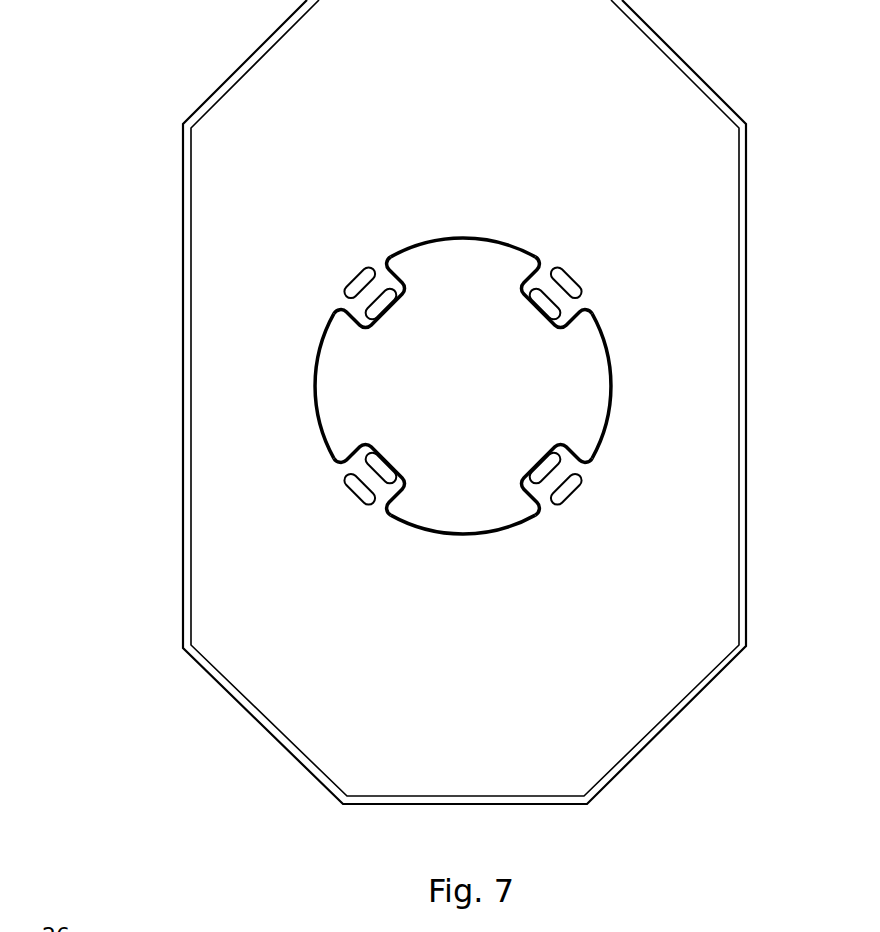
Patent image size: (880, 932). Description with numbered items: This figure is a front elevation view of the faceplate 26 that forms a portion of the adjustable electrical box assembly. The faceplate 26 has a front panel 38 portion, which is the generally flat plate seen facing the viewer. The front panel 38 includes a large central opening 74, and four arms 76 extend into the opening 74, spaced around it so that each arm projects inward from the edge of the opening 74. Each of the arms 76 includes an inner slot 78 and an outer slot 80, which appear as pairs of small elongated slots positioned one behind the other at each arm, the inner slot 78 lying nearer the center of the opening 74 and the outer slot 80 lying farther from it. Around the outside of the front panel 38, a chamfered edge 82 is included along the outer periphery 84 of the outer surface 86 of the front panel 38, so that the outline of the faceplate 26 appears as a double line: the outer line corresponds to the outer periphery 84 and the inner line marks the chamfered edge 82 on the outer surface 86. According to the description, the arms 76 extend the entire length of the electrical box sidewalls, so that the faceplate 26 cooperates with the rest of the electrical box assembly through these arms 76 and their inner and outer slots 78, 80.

The faceplate 26 is at (126, 94).
The front panel 38 is at (698, 120).
The outer periphery 84 is at (747, 265).
The chamfered edge 82 is at (741, 435).
The outer surface 86 is at (557, 98).
The opening 74 is at (597, 388).
The arms 76 is at (387, 313).
The inner slot 78 is at (346, 454).
The outer slot 80 is at (343, 475).